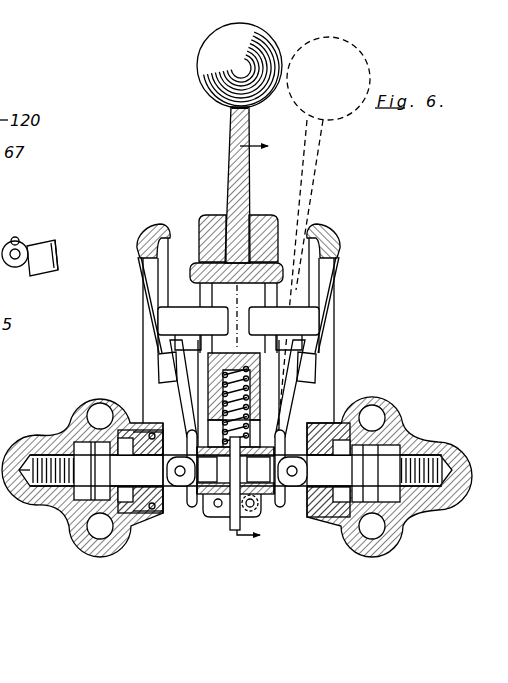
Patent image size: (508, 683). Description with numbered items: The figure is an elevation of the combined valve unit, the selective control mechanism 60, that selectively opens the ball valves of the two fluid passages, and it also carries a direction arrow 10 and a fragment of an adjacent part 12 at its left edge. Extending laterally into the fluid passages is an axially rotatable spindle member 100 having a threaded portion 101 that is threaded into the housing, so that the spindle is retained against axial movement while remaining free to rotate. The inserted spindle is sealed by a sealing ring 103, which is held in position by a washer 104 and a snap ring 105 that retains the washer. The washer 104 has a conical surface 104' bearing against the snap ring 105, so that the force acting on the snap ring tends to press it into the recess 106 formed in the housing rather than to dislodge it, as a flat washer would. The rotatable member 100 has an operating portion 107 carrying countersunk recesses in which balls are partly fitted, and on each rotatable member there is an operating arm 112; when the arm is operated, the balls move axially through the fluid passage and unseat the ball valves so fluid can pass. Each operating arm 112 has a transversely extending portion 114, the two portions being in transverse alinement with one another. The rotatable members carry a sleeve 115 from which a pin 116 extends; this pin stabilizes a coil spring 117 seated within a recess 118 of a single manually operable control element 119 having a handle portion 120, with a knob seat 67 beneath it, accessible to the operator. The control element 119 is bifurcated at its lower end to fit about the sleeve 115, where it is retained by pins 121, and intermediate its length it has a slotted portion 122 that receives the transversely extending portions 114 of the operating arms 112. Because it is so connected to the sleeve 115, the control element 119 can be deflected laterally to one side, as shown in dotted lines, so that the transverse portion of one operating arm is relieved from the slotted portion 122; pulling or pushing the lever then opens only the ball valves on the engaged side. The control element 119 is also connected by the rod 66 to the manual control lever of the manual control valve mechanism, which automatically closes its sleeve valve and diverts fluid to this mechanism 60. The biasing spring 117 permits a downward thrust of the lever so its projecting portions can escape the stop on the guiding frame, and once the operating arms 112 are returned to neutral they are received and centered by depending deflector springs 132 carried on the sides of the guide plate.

The direction of movement arrow 10 is at (254, 340).
The tie rod 12 is at (27, 492).
The selective control mechanism 60 is at (352, 321).
The rod 66 is at (48, 256).
The knob seat 67 is at (199, 84).
The rotatable spindle member 100 is at (65, 505).
The threaded portion 101 is at (43, 452).
The sealing ring 103 is at (148, 532).
The washer 104 is at (234, 510).
The conical surface 104' is at (170, 492).
The snap ring 105 is at (160, 513).
The recess 106 is at (152, 517).
The operating portion 107 is at (72, 518).
The operating arm 112 is at (173, 395).
The transversely extending portion 114 is at (180, 318).
The sleeve 115 is at (280, 512).
The pin 116 is at (233, 525).
The coil spring 117 is at (288, 406).
The recess 118 is at (212, 372).
The control element 119 is at (228, 180).
The handle portion 120 is at (200, 50).
The pins 121 is at (222, 512).
The slotted portion 122 is at (191, 265).
The deflector springs 132 is at (146, 296).